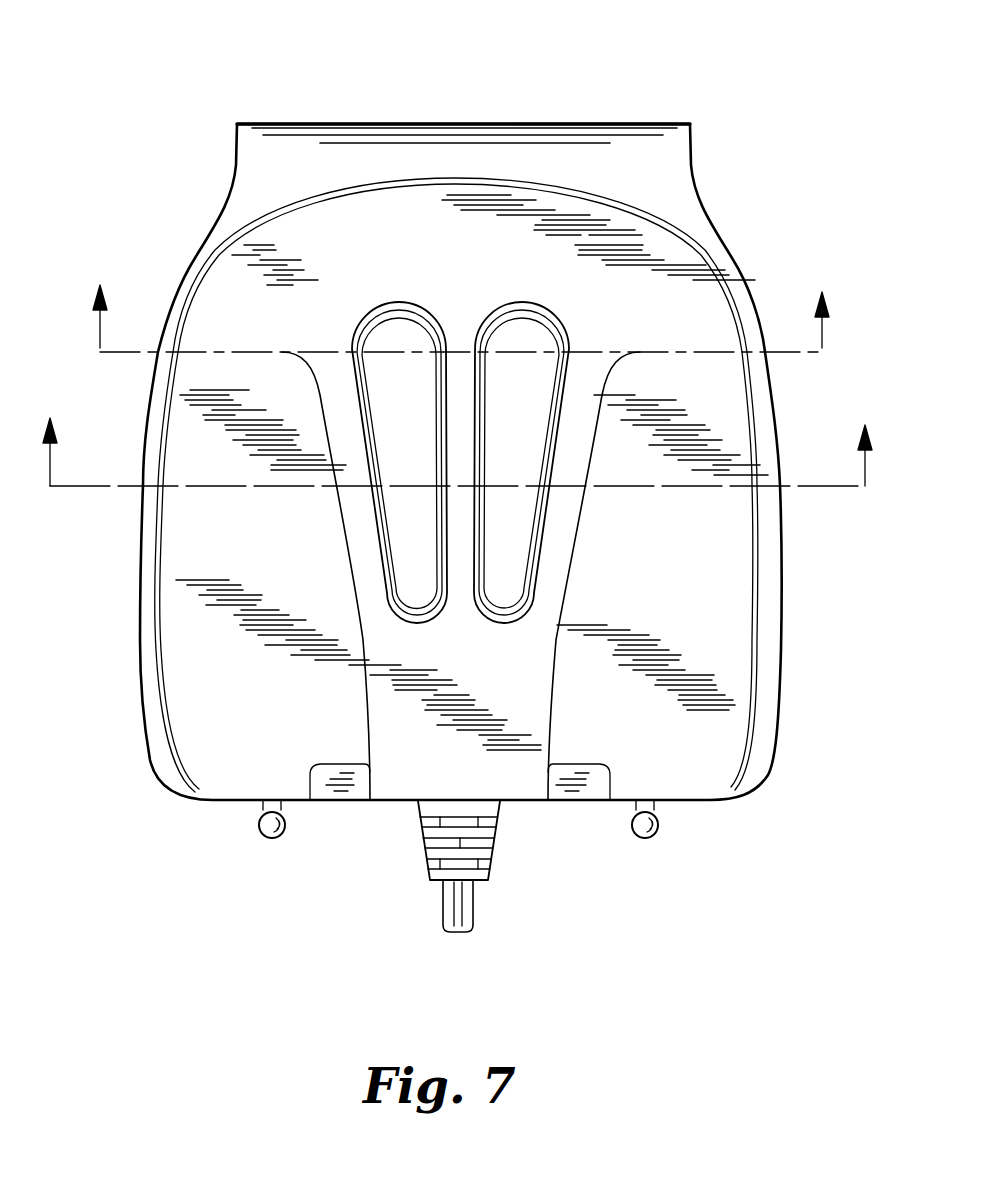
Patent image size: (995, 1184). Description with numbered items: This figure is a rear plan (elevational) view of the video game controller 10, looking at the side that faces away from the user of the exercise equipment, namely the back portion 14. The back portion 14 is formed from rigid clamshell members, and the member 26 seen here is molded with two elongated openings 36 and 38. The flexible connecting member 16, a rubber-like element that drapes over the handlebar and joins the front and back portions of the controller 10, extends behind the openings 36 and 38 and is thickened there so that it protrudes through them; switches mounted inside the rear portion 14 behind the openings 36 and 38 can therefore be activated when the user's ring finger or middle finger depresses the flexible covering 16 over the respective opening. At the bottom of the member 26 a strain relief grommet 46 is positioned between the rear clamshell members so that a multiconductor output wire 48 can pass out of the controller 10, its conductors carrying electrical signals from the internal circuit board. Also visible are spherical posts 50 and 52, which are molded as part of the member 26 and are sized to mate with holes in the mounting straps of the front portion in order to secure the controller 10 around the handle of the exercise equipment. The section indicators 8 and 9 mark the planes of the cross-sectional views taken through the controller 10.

The controller 10 is at (784, 140).
The back portion 14 is at (158, 832).
The flexible connecting member 16 is at (622, 124).
The rigid member 26 is at (232, 755).
The elongated opening 36 is at (360, 318).
The elongated opening 38 is at (560, 318).
The strain relief grommet 46 is at (497, 840).
The multiconductor output wire 48 is at (475, 907).
The spherical post 50 is at (273, 838).
The spherical post 52 is at (645, 838).
The section line 8- 8 is at (450, 475).
The section line 9- 9 is at (454, 341).